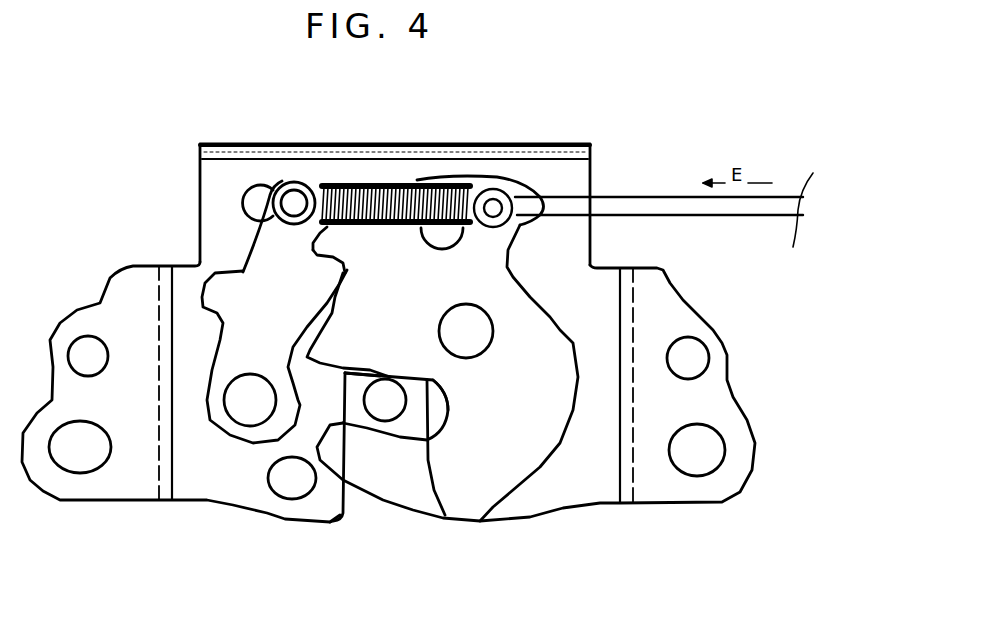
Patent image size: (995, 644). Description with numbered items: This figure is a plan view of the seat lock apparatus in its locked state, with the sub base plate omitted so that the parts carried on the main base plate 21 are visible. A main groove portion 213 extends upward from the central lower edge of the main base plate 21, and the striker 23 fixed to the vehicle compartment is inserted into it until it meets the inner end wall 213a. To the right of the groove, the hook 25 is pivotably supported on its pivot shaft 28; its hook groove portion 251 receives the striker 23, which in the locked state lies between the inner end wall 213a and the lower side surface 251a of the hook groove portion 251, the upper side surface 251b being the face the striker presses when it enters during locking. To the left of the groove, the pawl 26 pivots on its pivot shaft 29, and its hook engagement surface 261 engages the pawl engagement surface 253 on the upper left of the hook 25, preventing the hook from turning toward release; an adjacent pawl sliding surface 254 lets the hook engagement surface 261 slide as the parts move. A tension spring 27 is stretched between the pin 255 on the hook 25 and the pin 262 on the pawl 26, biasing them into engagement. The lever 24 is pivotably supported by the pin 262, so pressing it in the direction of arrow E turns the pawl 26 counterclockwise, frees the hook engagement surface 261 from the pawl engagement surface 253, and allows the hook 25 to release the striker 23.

The main base plate 21 is at (603, 500).
The striker 23 is at (385, 405).
The lever 24 is at (673, 207).
The hook 25 is at (490, 490).
The pawl 26 is at (222, 417).
The tension spring 27 is at (377, 185).
The pivot shaft 28 is at (473, 337).
The pivot shaft 29 is at (251, 407).
The main base plate groove portion 213 is at (340, 513).
The inner end wall 213a is at (357, 378).
The hook groove portion 251 is at (443, 437).
The lower side surface 251a is at (415, 380).
The upper side surface 251b is at (426, 382).
The pawl engagement surface 253 is at (343, 263).
The pawl sliding surface 254 is at (340, 246).
The pin 255 is at (497, 200).
The hook engagement surface 261 is at (257, 245).
The pin 262 is at (296, 200).